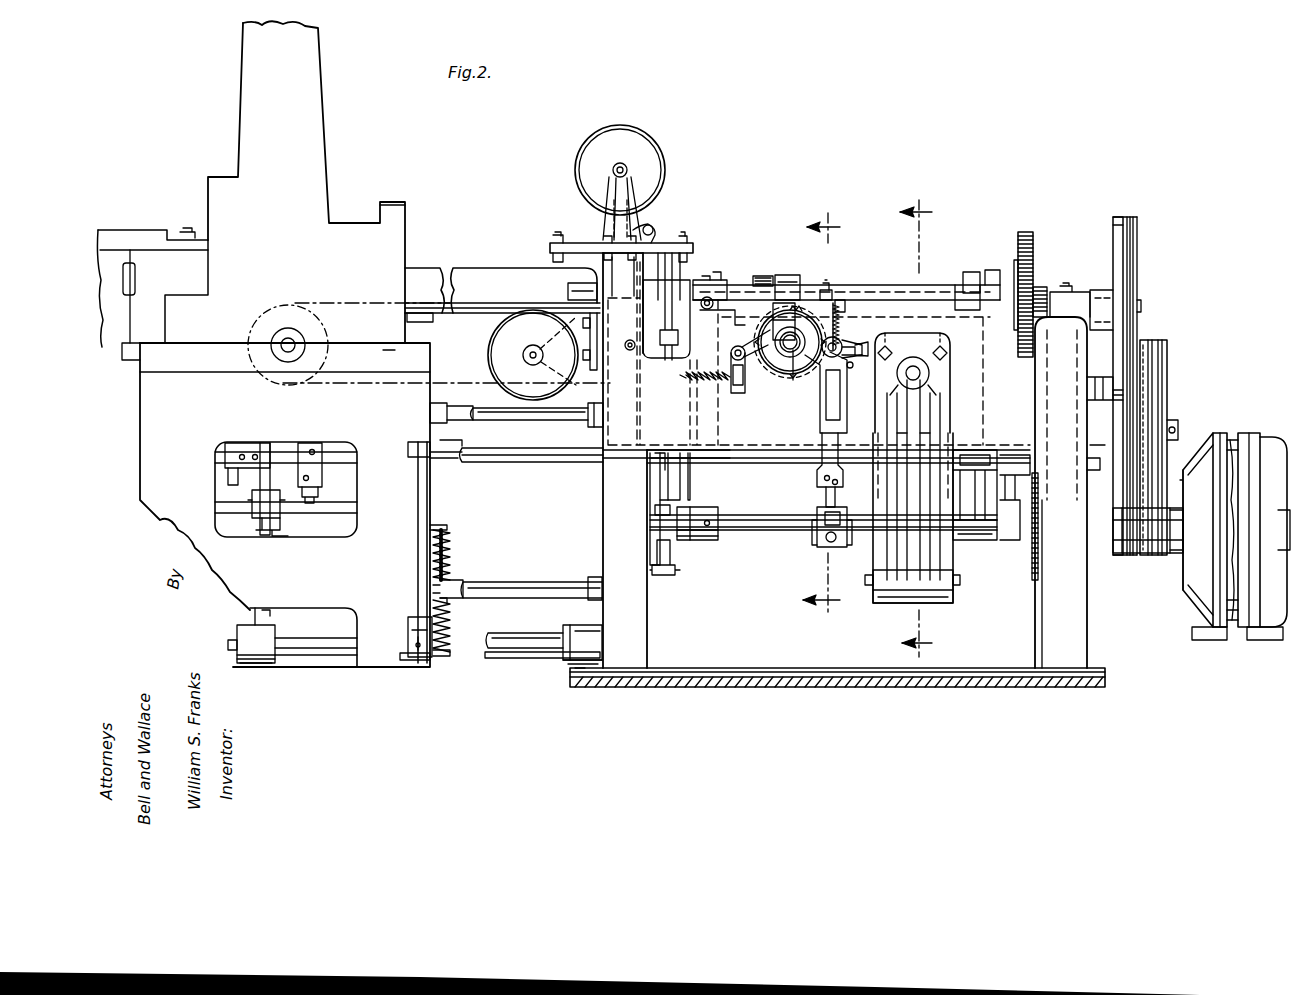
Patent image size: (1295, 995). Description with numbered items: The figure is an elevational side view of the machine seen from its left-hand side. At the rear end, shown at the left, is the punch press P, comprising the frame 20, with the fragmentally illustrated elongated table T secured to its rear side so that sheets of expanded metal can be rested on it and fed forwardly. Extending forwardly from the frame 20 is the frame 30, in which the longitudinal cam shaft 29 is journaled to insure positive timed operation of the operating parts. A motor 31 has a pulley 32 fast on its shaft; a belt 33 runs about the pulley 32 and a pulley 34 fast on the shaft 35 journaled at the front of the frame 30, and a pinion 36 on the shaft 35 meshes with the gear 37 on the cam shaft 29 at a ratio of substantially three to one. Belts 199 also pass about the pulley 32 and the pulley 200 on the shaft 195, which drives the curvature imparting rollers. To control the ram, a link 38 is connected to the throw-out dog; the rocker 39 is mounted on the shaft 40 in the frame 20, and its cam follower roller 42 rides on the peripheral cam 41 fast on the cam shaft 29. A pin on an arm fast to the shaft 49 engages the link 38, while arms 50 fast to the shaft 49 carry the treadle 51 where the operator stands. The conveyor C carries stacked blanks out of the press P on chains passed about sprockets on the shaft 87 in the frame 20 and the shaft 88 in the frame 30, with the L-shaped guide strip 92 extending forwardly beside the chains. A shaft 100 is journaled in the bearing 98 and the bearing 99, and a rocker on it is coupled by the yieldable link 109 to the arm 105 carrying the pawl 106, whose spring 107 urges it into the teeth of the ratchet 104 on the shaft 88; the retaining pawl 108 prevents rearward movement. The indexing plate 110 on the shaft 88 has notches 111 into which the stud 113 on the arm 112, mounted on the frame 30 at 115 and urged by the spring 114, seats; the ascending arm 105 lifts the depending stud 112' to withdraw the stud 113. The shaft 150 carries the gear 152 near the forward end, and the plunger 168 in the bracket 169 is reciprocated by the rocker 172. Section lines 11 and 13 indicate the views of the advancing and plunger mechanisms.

The punch press P is at (326, 119).
The elongated table T is at (128, 232).
The conveyor C is at (762, 275).
The frame 20 is at (393, 237).
The shaft 87 is at (289, 345).
The L-shaped guide strip 92 is at (494, 272).
The rocker 39 is at (286, 489).
The shaft 40 is at (310, 515).
The peripheral cam 41 is at (268, 445).
The cam follower roller 42 is at (268, 498).
The link 38 is at (252, 615).
The cam shaft 29 is at (776, 440).
The frame 30 is at (640, 622).
The shaft 49 is at (532, 636).
The arms 50 is at (568, 663).
The treadle 51 is at (512, 660).
The shaft 150 is at (958, 290).
The arm mounting 115 is at (706, 298).
The arm 112 is at (751, 267).
The indexing plate 110 is at (780, 290).
The notches 111 is at (760, 325).
The stud 113 is at (805, 295).
The stud 112' is at (856, 281).
The spring 114 is at (848, 320).
The ratchet 104 is at (778, 375).
The shaft 88 is at (792, 380).
The retaining pawl 108 is at (742, 388).
The spring 107 is at (812, 378).
The arm 105 is at (838, 338).
The pawl 106 is at (842, 352).
The link 109 is at (822, 497).
The bearing 98 is at (684, 543).
The shaft 100 is at (746, 532).
The plunger 168 is at (930, 372).
The rocker 172 is at (920, 412).
The bracket 169 is at (950, 565).
The bearing 99 is at (962, 540).
The section line 11 is at (830, 413).
The section line 13 is at (927, 428).
The gear 152 is at (1027, 235).
The pinion 36 is at (1042, 285).
The belt 33 is at (1120, 220).
The pulley 34 is at (1113, 232).
The shaft 35 is at (1140, 305).
The pulley 200 is at (1168, 352).
The belts 199 is at (1150, 382).
The shaft 195 is at (1178, 432).
The pulley 32 is at (1140, 553).
The gear 37 is at (1032, 574).
The motor 31 is at (1227, 435).